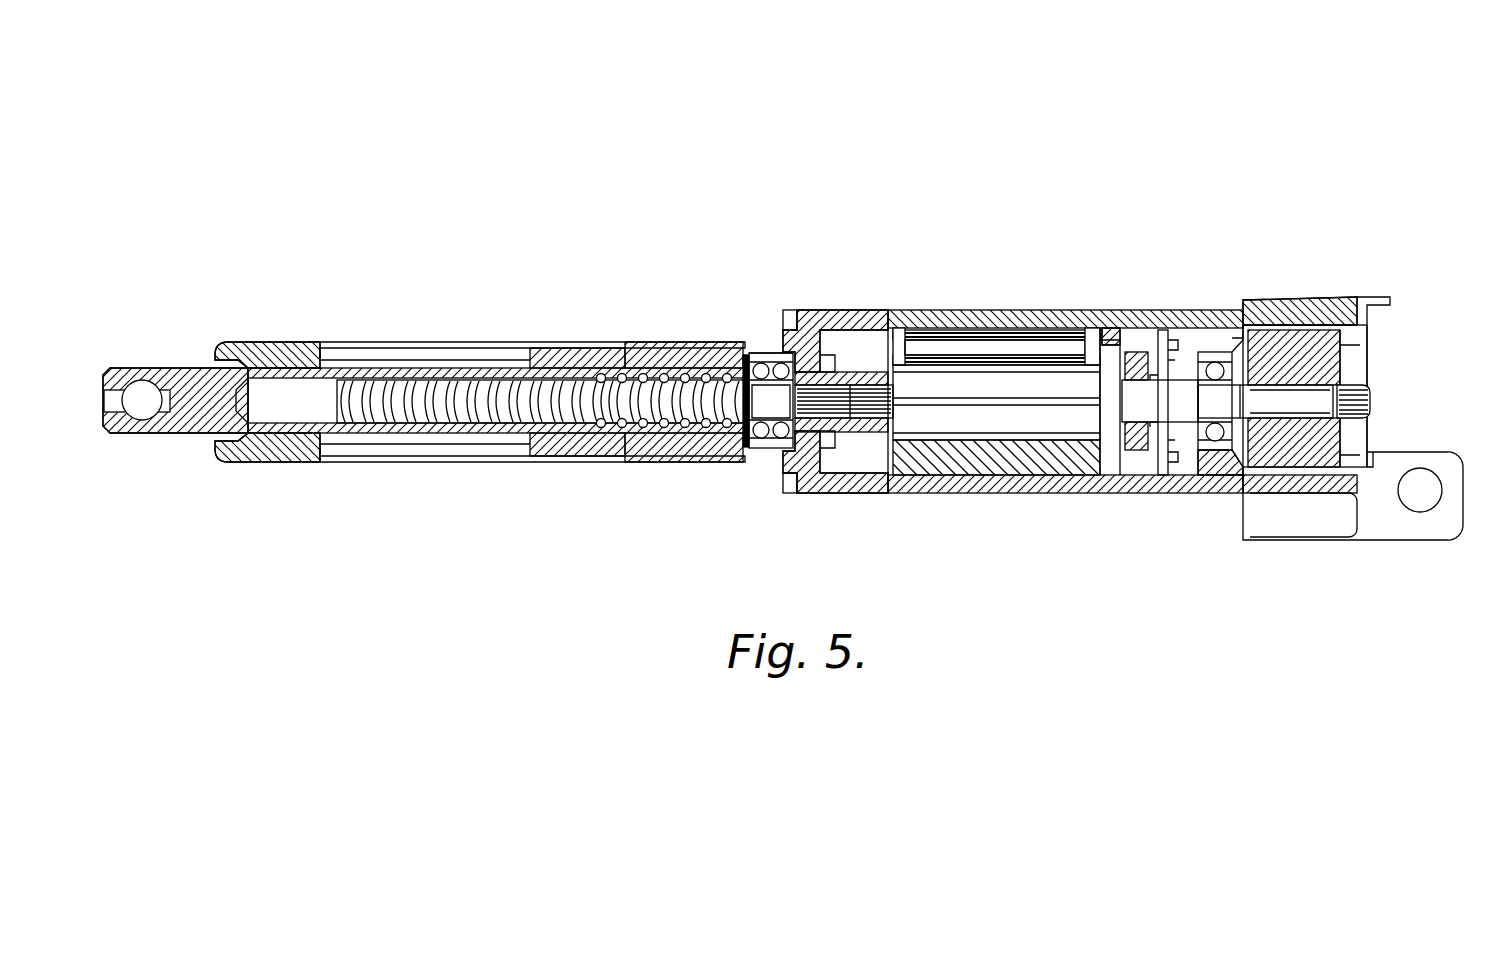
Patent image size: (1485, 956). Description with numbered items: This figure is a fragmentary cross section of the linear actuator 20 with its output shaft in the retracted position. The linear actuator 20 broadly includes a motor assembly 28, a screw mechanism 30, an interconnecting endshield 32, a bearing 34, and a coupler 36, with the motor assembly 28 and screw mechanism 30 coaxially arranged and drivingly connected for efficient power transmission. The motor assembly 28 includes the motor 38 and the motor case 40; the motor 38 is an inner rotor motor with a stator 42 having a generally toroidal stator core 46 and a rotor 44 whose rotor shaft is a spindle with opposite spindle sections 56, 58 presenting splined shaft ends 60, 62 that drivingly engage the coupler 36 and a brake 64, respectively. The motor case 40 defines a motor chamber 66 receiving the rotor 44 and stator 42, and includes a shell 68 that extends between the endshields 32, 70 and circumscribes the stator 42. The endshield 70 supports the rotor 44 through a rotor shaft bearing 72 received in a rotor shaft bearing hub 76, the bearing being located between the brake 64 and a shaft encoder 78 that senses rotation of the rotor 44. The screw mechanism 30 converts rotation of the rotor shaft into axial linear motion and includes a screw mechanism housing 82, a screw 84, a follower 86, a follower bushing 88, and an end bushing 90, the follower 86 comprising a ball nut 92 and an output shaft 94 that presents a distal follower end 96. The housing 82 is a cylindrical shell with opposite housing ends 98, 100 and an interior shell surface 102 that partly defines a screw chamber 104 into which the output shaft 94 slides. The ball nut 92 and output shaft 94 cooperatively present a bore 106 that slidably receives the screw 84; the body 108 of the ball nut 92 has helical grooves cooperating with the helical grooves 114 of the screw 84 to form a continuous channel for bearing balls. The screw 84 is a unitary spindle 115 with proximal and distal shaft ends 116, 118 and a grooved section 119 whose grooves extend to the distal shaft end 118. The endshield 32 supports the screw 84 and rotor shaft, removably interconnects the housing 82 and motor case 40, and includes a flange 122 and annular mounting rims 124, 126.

The linear actuator 20 is at (1008, 128).
The motor assembly 28 is at (1080, 493).
The screw mechanism 30 is at (366, 465).
The endshield 32 is at (808, 500).
The bearing 34 is at (748, 345).
The coupler 36 is at (862, 365).
The motor 38 is at (1035, 340).
The motor case 40 is at (1198, 500).
The stator 42 is at (1020, 465).
The rotor 44 is at (980, 385).
The stator core 46 is at (932, 345).
The spindle section 56 is at (868, 405).
The spindle section 58 is at (1368, 400).
The shaft end 60 is at (910, 520).
The shaft end 62 is at (1430, 300).
The brake 64 is at (1318, 345).
The motor chamber 66 is at (1180, 480).
The shell 68 is at (1093, 320).
The endshield 70 is at (1258, 330).
The rotor shaft bearing 72 is at (1215, 350).
The rotor shaft bearing hub 76 is at (1205, 460).
The shaft encoder 78 is at (1160, 475).
The screw mechanism housing 82 is at (399, 345).
The screw 84 is at (473, 407).
The follower 86 is at (640, 356).
The follower bushing 88 is at (540, 355).
The end bushing 90 is at (257, 345).
The ball nut 92 is at (640, 437).
The output shaft 94 is at (399, 435).
The distal follower end 96 is at (118, 385).
The housing end 98 is at (207, 328).
The housing end 100 is at (897, 258).
The interior shell surface 102 is at (326, 352).
The screw chamber 104 is at (358, 350).
The bore 106 is at (287, 420).
The body 108 is at (667, 360).
The helical grooves 114 is at (520, 412).
The unitary spindle 115 is at (735, 420).
The proximal shaft end 116 is at (752, 276).
The distal shaft end 118 is at (330, 487).
The grooved section 119 is at (456, 392).
The flange 122 is at (806, 318).
The annular mounting rim 124 is at (762, 440).
The annular mounting rim 126 is at (835, 460).